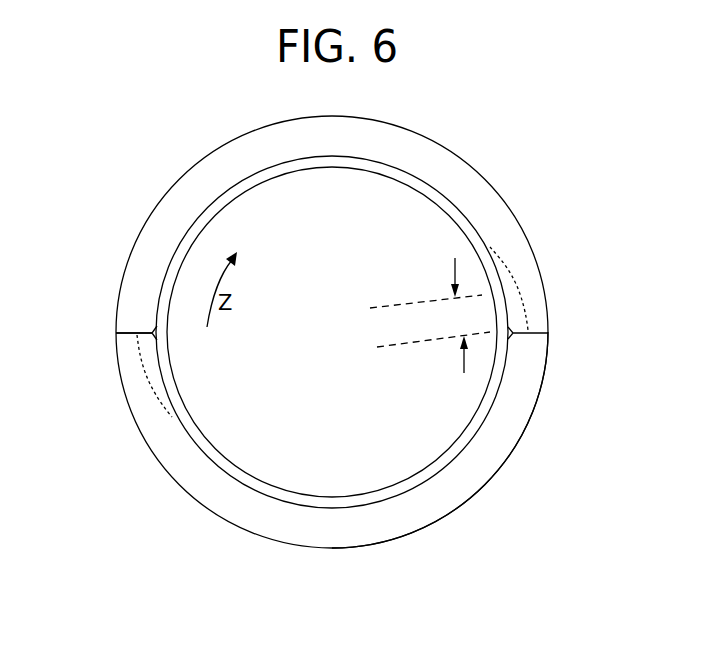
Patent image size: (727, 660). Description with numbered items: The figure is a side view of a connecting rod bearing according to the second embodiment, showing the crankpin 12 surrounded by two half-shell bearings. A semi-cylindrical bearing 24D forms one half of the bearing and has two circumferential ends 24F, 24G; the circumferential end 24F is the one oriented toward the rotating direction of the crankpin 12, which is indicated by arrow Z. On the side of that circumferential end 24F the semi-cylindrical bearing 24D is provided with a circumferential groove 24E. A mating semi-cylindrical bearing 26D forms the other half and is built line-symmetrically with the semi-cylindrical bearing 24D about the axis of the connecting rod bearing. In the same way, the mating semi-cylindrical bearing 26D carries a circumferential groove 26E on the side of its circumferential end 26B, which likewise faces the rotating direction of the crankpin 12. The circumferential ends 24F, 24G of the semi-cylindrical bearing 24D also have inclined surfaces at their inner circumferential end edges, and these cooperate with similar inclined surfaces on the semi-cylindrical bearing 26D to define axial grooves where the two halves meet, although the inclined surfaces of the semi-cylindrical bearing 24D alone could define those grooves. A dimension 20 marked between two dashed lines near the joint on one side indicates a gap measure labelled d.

The crankpin 12 is at (242, 453).
The gap 20 is at (403, 342).
The semi-cylindrical bearing 24D is at (502, 220).
The circumferential groove 24E is at (522, 293).
The circumferential end 24F is at (541, 348).
The circumferential end 24G is at (124, 345).
The circumferential end 26B is at (135, 318).
The mating semi-cylindrical bearing 26D is at (495, 452).
The circumferential groove 26E is at (136, 366).